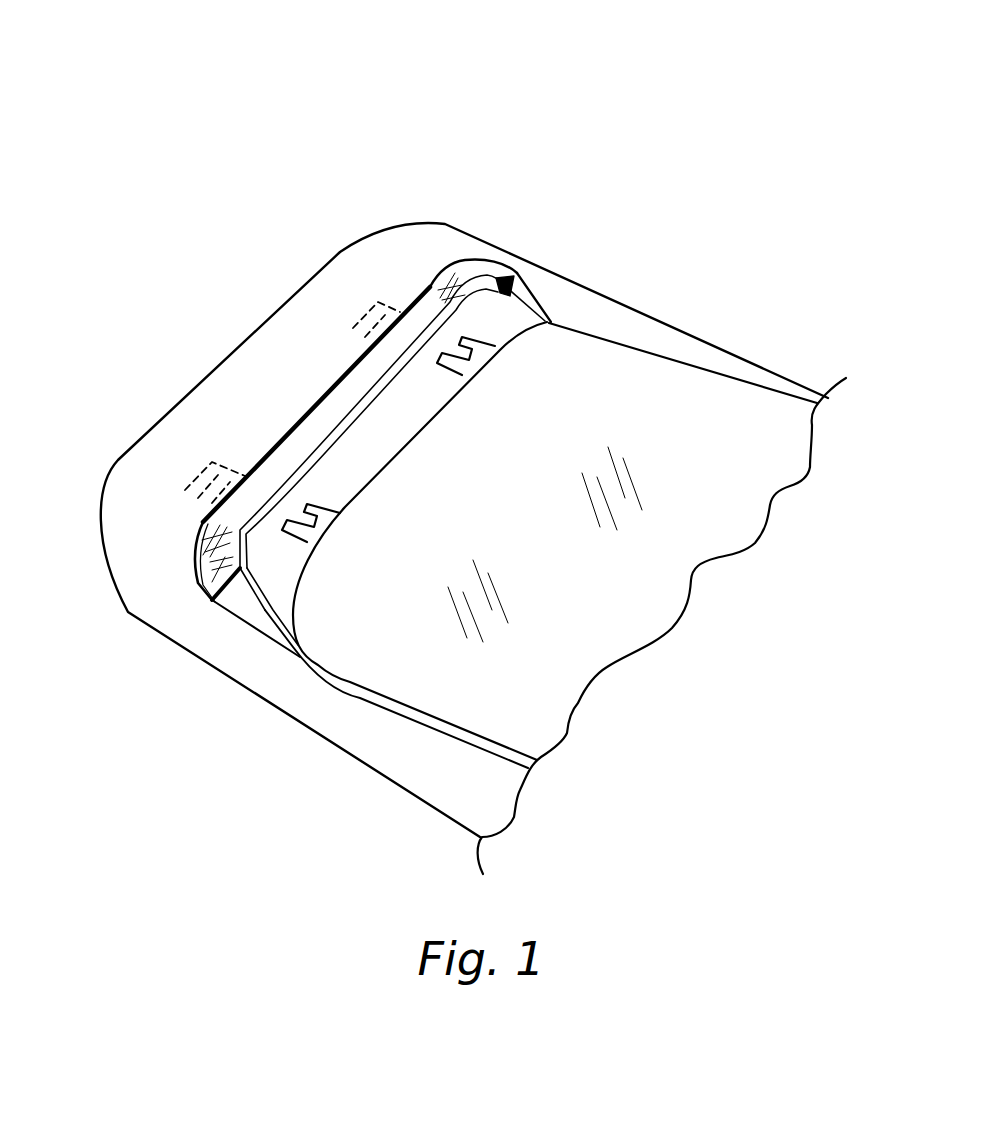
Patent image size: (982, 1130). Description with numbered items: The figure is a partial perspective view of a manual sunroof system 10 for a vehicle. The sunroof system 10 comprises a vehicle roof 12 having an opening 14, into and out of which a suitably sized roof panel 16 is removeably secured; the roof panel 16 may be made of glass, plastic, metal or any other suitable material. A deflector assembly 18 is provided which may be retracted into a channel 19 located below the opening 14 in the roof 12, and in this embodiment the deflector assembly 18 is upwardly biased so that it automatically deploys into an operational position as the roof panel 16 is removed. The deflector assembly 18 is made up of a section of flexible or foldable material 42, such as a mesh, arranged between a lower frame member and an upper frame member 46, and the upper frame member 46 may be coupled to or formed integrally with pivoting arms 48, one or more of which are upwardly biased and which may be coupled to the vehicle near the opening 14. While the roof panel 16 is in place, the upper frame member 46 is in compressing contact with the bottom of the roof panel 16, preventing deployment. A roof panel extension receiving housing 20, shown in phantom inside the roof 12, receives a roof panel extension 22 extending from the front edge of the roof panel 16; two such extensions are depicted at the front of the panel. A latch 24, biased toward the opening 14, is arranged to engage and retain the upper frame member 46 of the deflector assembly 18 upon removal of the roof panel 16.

The manual sunroof system 10 is at (574, 88).
The vehicle roof 12 is at (597, 313).
The opening 14 is at (366, 450).
The roof panel 16 is at (723, 396).
The deflector assembly 18 is at (463, 268).
The channel 19 is at (385, 390).
The roof panel extension receiving housing 20 is at (405, 312).
The roof panel extension 22 is at (497, 343).
The latch 24 is at (382, 333).
The flexible material 42 is at (212, 602).
The upper frame member 46 is at (343, 420).
The pivoting arms 48 is at (533, 296).